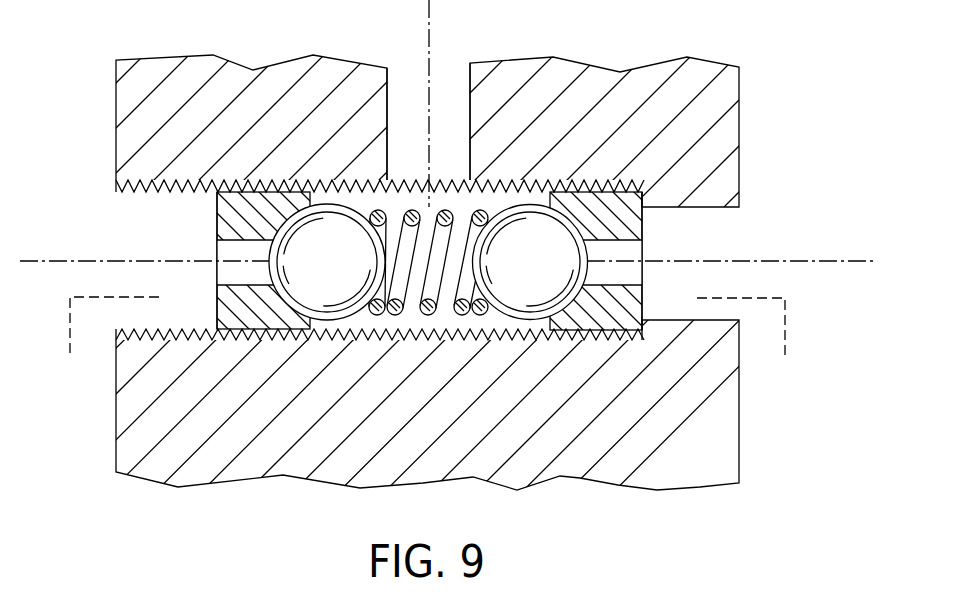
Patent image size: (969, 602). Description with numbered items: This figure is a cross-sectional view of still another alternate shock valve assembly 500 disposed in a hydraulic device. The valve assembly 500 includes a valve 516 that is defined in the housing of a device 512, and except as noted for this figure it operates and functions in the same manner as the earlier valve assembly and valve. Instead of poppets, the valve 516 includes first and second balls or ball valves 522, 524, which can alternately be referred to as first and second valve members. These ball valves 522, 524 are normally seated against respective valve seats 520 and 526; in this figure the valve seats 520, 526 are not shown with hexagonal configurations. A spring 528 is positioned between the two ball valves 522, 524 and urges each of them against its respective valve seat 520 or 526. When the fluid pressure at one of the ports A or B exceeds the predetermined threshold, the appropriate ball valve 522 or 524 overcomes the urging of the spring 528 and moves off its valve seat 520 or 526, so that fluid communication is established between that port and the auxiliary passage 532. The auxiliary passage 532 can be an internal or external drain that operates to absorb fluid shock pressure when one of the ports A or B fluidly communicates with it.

The valve assembly 500 is at (484, 301).
The device 512 is at (707, 106).
The valve 516 is at (501, 179).
The valve seat 520 is at (232, 222).
The first ball valve 522 is at (344, 271).
The second ball valve 524 is at (547, 271).
The valve seat 526 is at (630, 222).
The spring 528 is at (428, 316).
The auxiliary passage 532 is at (408, 76).